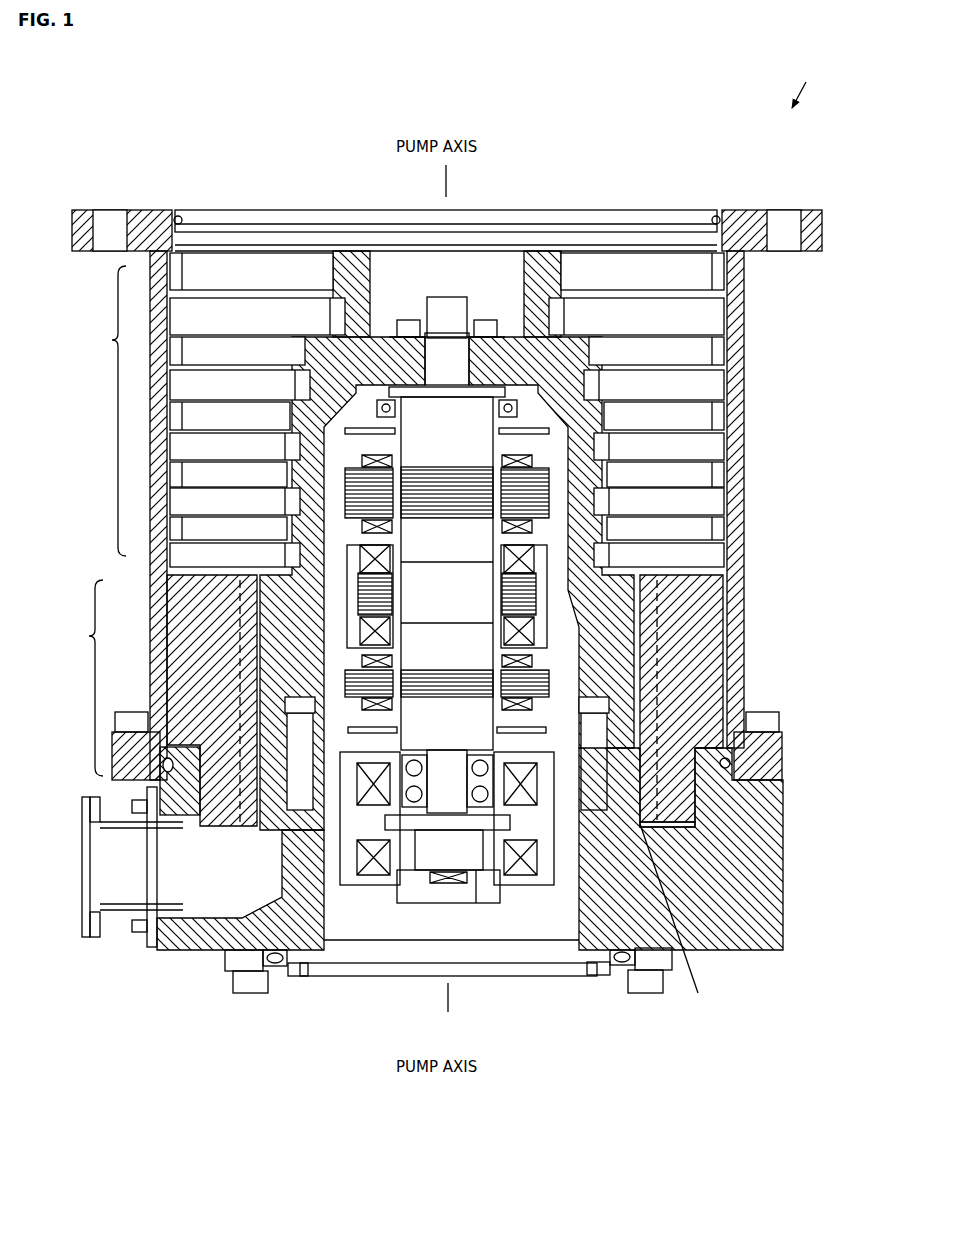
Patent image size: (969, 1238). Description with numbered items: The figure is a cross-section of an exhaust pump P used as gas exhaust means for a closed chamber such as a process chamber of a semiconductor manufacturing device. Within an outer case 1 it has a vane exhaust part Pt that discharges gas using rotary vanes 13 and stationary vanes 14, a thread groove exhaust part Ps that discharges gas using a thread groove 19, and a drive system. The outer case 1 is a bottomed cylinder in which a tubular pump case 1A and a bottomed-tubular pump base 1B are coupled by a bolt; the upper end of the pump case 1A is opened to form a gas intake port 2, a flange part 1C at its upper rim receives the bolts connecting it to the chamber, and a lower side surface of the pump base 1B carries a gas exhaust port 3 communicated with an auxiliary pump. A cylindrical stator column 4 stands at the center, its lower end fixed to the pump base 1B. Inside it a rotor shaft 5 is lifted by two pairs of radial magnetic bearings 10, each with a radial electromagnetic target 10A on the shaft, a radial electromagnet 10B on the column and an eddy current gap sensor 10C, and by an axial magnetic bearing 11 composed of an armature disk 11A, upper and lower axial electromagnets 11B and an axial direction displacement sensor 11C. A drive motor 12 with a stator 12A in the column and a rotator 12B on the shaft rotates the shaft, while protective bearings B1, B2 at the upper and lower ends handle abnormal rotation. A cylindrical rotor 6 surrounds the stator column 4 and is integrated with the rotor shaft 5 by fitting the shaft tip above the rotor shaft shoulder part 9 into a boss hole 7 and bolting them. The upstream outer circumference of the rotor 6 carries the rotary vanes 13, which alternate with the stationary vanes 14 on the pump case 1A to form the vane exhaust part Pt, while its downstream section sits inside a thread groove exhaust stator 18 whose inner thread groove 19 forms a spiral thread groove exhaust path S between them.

The exhaust pump P is at (809, 78).
The outer case 1 is at (459, 515).
The pump case 1A is at (745, 662).
The pump base 1B is at (783, 847).
The flange part 1C is at (133, 209).
The gas intake port 2 is at (341, 211).
The gas exhaust port 3 is at (82, 890).
The stator column 4 is at (573, 673).
The rotor shaft 5 is at (452, 302).
The rotor 6 is at (333, 249).
The boss hole 7 is at (426, 371).
The rotor shaft shoulder part 9 is at (481, 384).
The radial magnetic bearing 10 is at (343, 490).
The radial electromagnetic target 10A is at (460, 512).
The radial electromagnet 10B is at (392, 470).
The eddy current gap sensor 10C is at (392, 432).
The axial magnetic bearing 11 is at (446, 896).
The armature disk 11A is at (422, 823).
The axial electromagnet 11B is at (353, 878).
The axial direction displacement sensor 11C is at (450, 884).
The drive motor 12 is at (345, 573).
The stator 12A is at (392, 630).
The rotator 12B is at (420, 568).
The rotary vanes 13 is at (704, 263).
The stationary vanes 14 is at (712, 306).
The thread groove exhaust stator 18 is at (713, 648).
The thread groove 19 is at (660, 622).
The protective bearing B1 is at (386, 399).
The protective bearing B2 is at (420, 789).
The thread groove exhaust path S is at (674, 920).
The vane exhaust part Pt is at (101, 411).
The thread groove exhaust part Ps is at (153, 700).